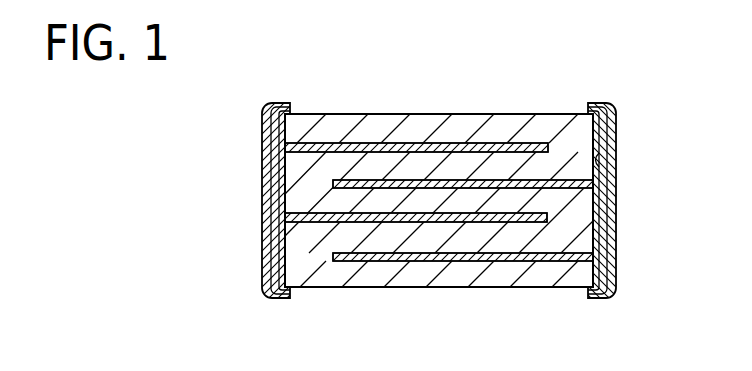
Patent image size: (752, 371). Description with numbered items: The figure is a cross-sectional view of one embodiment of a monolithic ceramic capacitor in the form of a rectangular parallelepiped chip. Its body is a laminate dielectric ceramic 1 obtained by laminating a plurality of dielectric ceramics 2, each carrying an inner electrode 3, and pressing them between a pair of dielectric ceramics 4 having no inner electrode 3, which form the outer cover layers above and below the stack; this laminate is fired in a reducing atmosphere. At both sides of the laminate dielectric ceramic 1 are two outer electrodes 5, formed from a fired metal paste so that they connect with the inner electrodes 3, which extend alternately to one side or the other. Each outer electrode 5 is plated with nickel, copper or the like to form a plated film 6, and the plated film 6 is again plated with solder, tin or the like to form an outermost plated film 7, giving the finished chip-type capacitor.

The laminate dielectric ceramic 1 is at (437, 113).
The dielectric ceramics 2 is at (398, 167).
The inner electrodes 3 is at (334, 258).
The dielectric ceramics having no inner electrode 4 is at (482, 122).
The outer electrodes 5 is at (300, 122).
The plated films of nickel, copper or the like 6 is at (267, 153).
The plated films of solder, tin or the like 7 is at (265, 227).